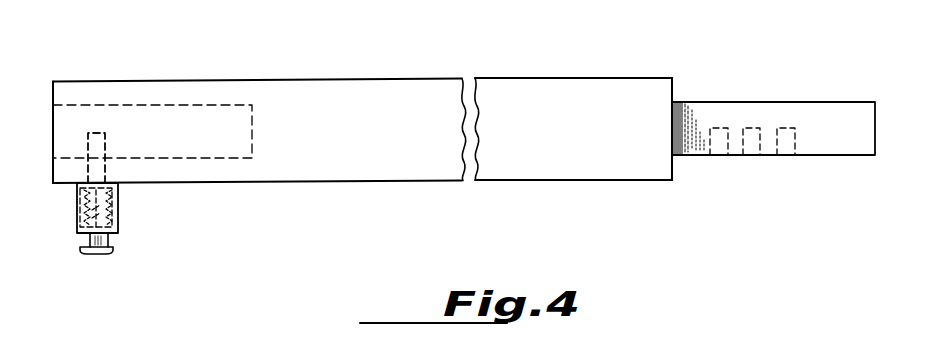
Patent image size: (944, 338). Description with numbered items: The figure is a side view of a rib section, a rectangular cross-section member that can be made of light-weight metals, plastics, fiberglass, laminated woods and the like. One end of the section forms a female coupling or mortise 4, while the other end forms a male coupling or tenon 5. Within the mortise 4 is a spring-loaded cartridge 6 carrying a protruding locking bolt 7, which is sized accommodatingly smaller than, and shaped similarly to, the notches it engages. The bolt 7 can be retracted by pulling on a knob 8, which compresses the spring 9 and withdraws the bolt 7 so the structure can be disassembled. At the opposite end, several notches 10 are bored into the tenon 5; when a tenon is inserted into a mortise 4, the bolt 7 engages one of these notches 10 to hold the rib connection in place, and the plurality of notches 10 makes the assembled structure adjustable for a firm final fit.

The female coupling or mortise 4 is at (52, 121).
The male coupling or tenon 5 is at (788, 113).
The spring-loaded cartridge 6 is at (130, 211).
The locking bolt 7 is at (107, 145).
The knob 8 is at (97, 255).
The spring 9 is at (86, 214).
The notches 10 is at (785, 157).